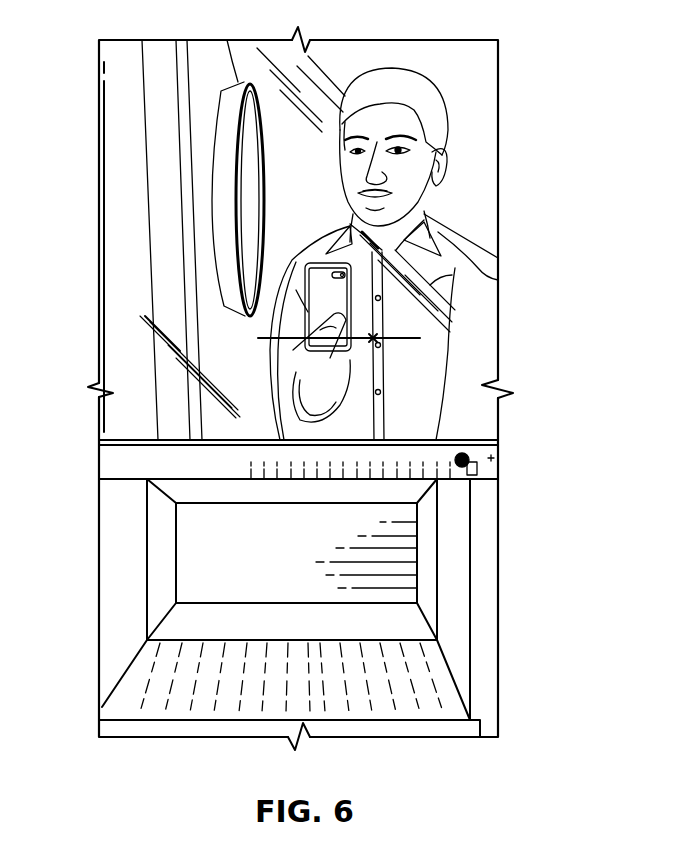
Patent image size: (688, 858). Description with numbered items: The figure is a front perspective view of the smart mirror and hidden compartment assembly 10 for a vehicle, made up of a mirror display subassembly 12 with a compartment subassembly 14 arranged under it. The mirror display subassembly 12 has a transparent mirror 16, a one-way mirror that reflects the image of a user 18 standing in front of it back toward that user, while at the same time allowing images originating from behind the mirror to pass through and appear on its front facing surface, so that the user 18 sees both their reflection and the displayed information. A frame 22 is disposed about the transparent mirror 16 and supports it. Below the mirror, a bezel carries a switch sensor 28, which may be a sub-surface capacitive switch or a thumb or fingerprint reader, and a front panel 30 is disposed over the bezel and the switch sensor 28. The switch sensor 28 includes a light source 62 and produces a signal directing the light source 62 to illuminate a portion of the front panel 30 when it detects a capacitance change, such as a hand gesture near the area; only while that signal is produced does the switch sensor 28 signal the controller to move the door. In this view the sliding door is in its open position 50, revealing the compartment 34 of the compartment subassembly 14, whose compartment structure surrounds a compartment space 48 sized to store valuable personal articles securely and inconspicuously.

The mirror and hidden compartment assembly 10 is at (228, 408).
The mirror display subassembly 12 is at (228, 338).
The compartment subassembly 14 is at (200, 582).
The transparent mirror 16 is at (480, 103).
The user 18 is at (433, 283).
The frame 22 is at (498, 155).
The switch sensor 28 is at (498, 437).
The front panel 30 is at (478, 470).
The compartment 34 is at (271, 578).
The compartment space 48 is at (410, 574).
The open position 50 is at (358, 487).
The light source 62 is at (498, 456).